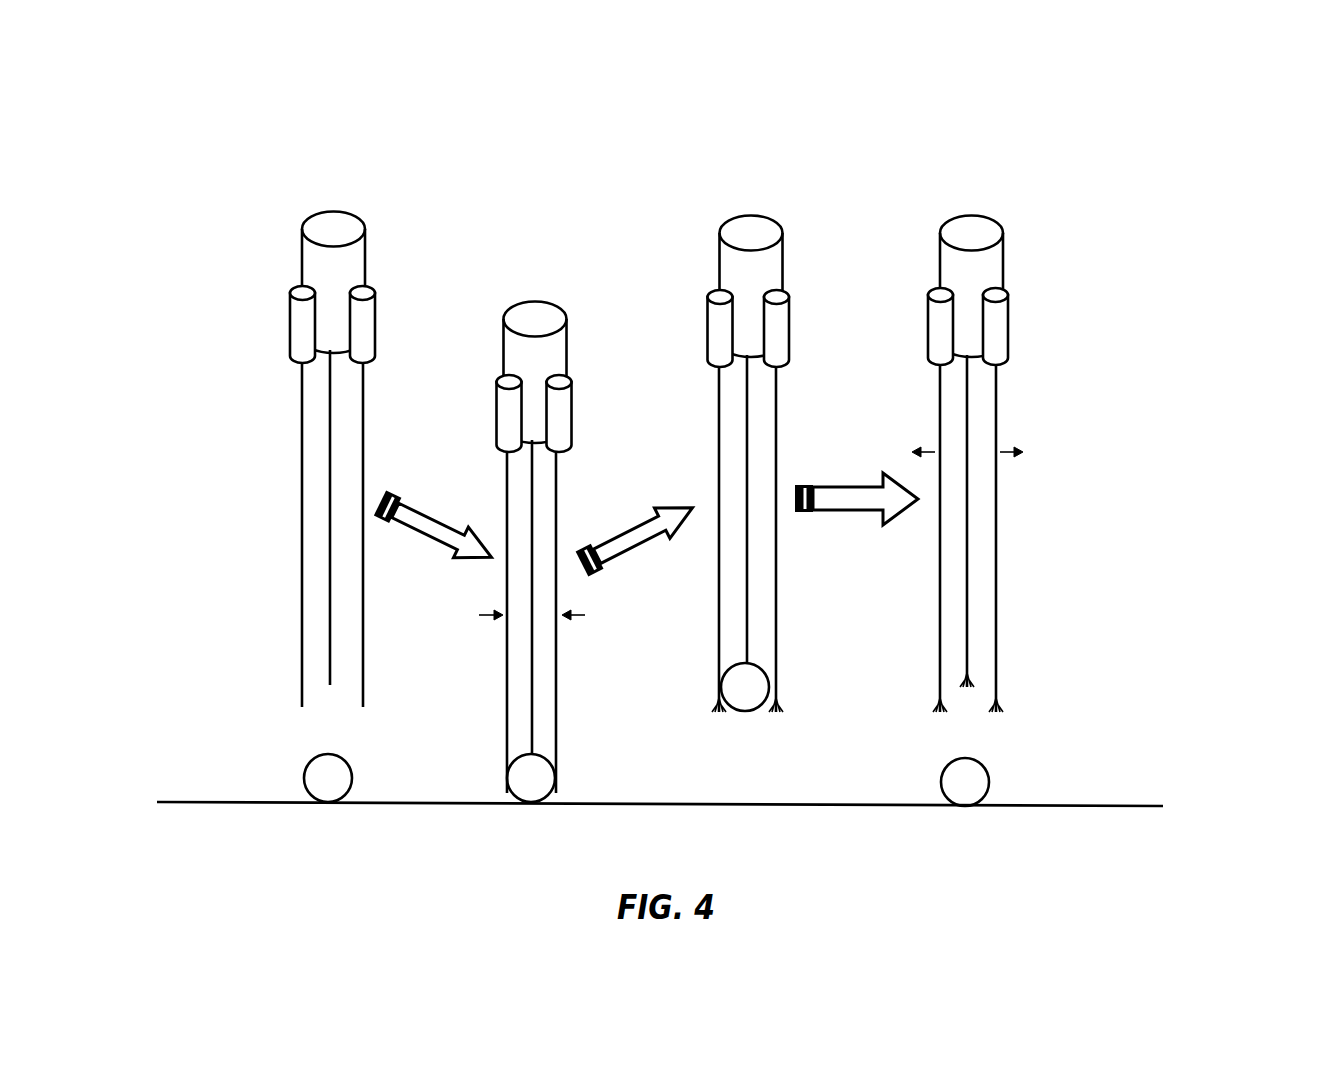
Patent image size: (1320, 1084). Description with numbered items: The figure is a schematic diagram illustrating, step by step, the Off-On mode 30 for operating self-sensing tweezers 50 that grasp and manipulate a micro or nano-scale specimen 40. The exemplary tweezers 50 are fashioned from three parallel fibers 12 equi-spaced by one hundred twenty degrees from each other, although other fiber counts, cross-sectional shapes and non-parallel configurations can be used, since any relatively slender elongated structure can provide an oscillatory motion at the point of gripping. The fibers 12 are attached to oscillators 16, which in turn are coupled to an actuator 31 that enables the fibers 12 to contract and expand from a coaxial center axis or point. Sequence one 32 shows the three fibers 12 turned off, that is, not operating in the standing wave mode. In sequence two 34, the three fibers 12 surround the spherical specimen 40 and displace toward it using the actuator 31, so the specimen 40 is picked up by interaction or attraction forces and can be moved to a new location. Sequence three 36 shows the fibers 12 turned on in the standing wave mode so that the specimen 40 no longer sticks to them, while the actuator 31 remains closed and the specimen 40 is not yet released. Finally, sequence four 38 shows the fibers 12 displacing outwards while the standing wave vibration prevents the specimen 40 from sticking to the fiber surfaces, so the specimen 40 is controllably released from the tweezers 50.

The Off-On mode 30 is at (708, 456).
The sequence #1 32 is at (392, 406).
The sequence #2 34 is at (555, 178).
The sequence #3 36 is at (770, 178).
The sequence #4 38 is at (987, 178).
The tweezers 50 is at (330, 406).
The actuator 31 is at (367, 255).
The oscillators 16 is at (377, 310).
The fibers 12 is at (343, 436).
The specimen 40 is at (350, 760).